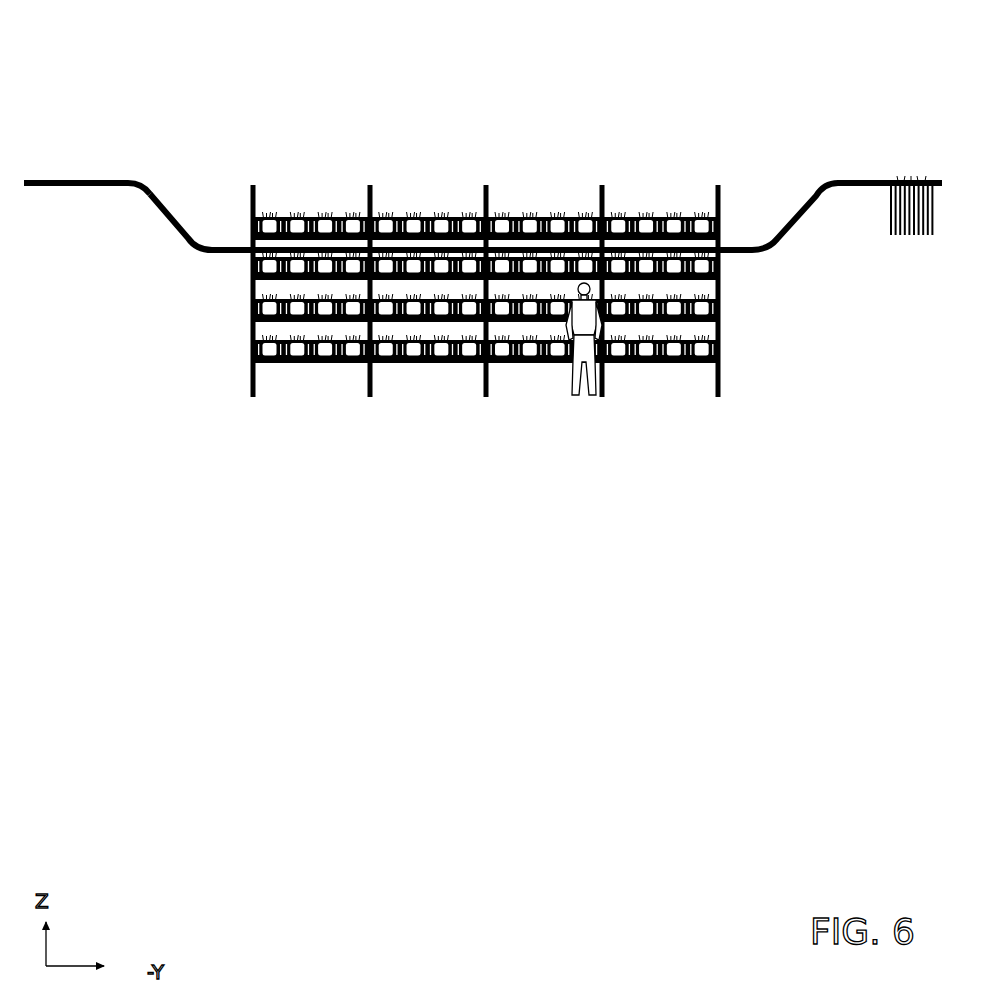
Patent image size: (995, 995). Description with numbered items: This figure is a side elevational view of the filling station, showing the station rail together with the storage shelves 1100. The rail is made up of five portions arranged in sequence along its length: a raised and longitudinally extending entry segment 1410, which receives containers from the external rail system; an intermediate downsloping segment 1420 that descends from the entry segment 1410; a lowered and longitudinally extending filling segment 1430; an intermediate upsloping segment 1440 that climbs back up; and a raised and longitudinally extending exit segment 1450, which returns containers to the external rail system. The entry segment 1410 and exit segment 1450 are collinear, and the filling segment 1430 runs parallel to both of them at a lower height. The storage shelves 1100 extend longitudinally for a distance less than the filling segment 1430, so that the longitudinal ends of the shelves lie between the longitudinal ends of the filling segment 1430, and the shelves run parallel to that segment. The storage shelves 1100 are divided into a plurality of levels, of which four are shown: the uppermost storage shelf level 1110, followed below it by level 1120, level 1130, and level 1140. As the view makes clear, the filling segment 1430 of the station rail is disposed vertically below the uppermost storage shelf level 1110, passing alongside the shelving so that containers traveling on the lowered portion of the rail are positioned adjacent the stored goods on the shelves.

The storage shelves 1100 is at (377, 233).
The uppermost storage shelf level 1110 is at (236, 228).
The storage shelf level 1120 is at (233, 268).
The storage shelf level 1130 is at (233, 312).
The storage shelf level 1140 is at (223, 358).
The entry segment 1410 is at (870, 182).
The intermediate downsloping segment 1420 is at (793, 225).
The filling segment 1430 is at (745, 248).
The intermediate upsloping segment 1440 is at (172, 222).
The exit segment 1450 is at (110, 181).